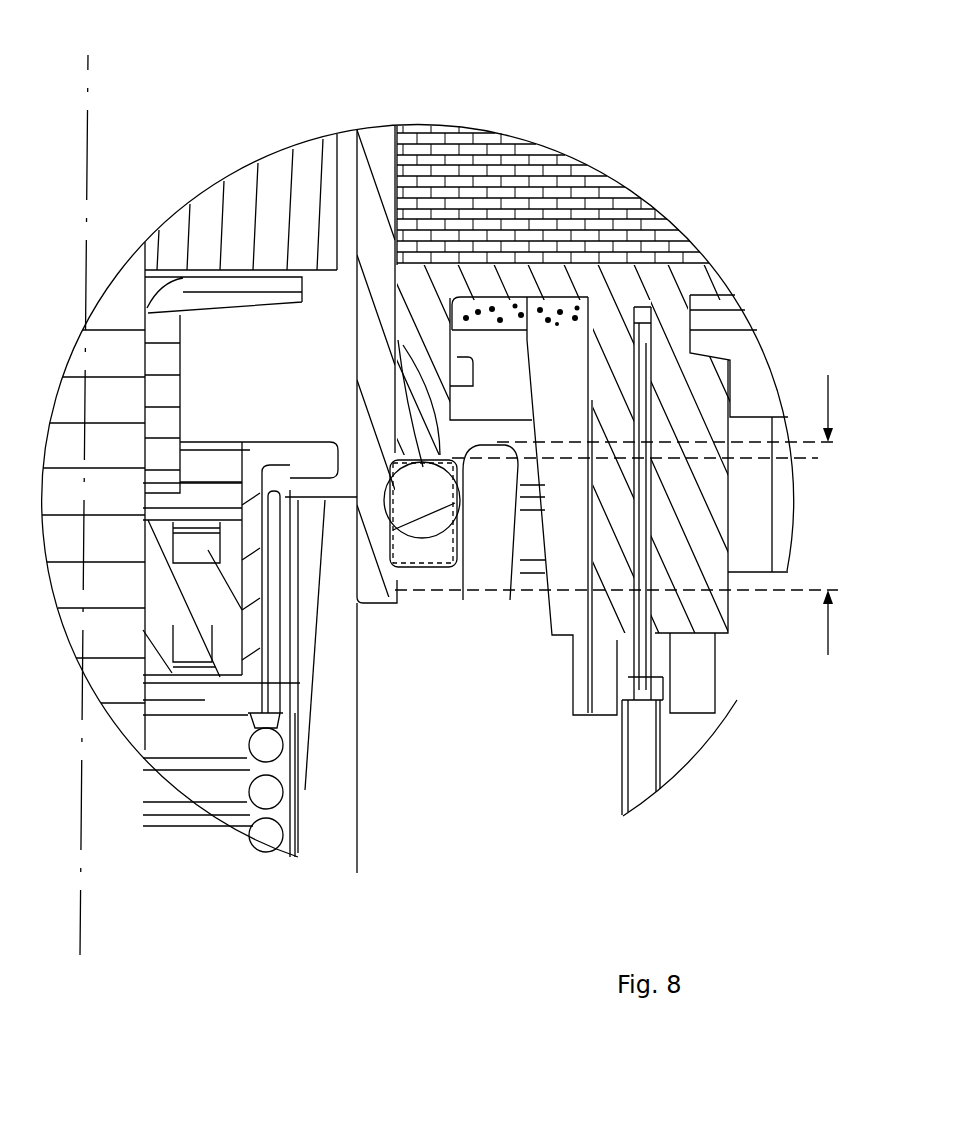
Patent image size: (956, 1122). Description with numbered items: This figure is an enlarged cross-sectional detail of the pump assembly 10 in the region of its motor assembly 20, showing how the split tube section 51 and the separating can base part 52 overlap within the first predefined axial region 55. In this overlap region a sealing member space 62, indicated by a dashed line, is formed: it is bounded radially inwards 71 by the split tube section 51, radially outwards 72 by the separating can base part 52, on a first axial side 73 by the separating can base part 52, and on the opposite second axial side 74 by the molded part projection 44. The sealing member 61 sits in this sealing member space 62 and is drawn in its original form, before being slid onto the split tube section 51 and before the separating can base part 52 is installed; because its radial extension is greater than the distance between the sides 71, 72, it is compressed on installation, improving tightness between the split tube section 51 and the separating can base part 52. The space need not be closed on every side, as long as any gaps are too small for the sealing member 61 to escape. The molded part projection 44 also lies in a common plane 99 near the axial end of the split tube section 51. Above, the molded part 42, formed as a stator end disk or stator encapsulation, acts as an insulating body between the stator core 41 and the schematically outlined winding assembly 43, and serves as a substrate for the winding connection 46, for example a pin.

The pump assembly 10 is at (615, 78).
The motor assembly 20 is at (170, 118).
The stator core 41 is at (557, 200).
The molded part 42 is at (622, 280).
The winding assembly 43 is at (590, 300).
The molded part projection 44 is at (395, 340).
The winding connection 46 is at (660, 812).
The split tube section 51 is at (362, 608).
The separating can base part 52 is at (313, 790).
The first predefined axial region 55 is at (828, 632).
The sealing member 61 is at (428, 520).
The sealing member space 62 is at (447, 562).
The radially inward side 71 is at (392, 490).
The radially outward side 72 is at (457, 530).
The first axial side 73 is at (410, 600).
The second axial side 74 is at (400, 455).
The common plane 99 is at (805, 455).